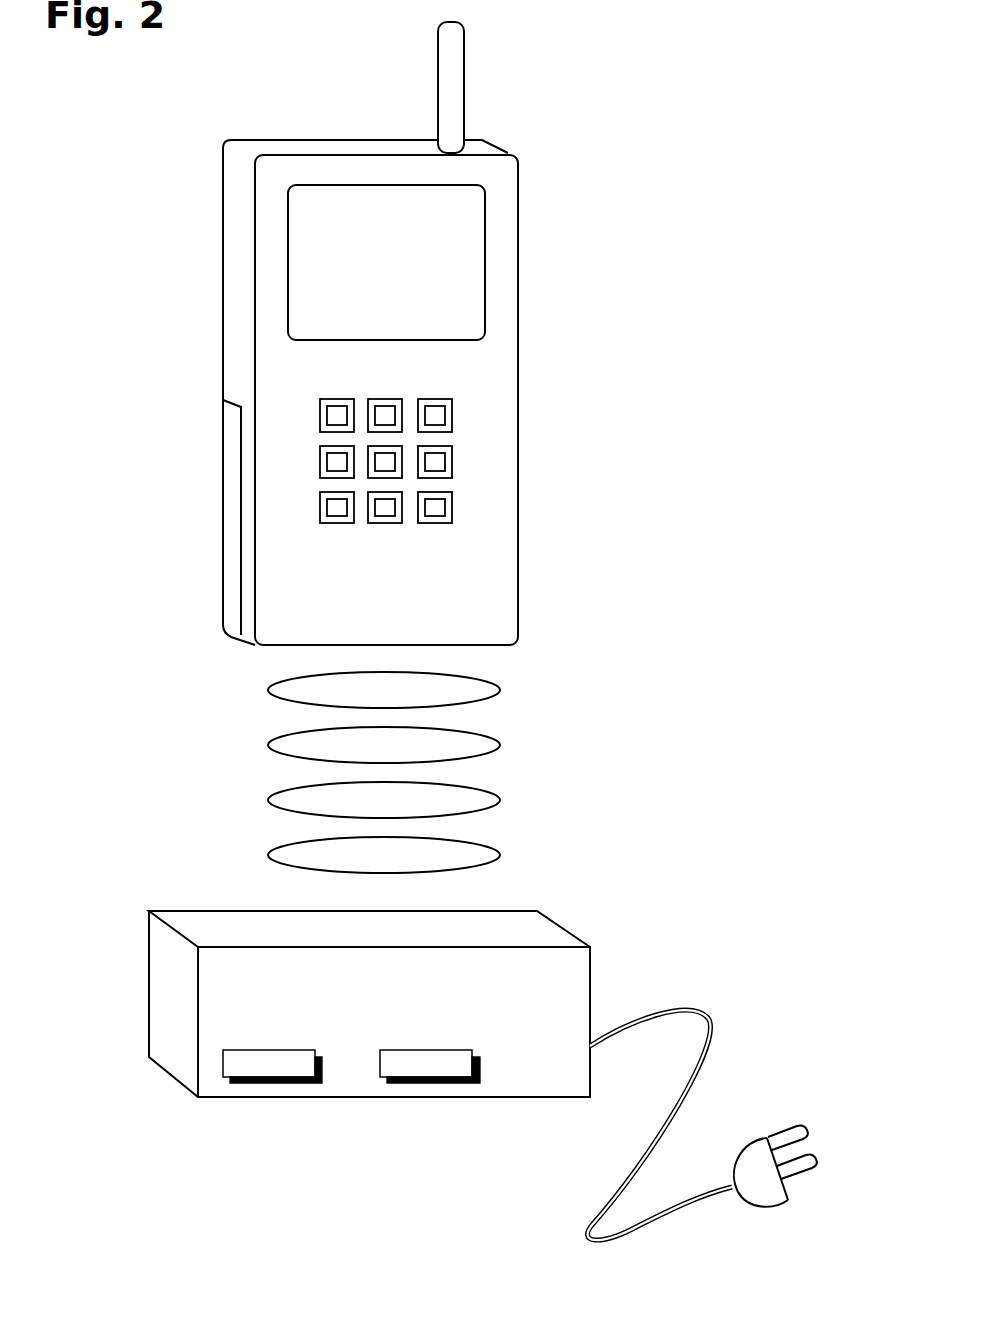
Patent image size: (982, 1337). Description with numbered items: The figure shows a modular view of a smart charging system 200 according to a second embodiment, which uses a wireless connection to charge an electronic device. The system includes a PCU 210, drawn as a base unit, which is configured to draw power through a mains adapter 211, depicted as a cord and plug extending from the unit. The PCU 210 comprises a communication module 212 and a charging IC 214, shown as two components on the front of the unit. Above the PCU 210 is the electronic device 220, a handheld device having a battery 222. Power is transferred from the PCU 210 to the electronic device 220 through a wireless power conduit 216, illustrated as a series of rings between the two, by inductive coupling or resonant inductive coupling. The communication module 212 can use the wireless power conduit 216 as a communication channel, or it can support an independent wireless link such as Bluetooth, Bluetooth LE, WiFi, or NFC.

The smart charging system 200 is at (634, 226).
The electronic device 220 is at (223, 184).
The battery 222 is at (222, 515).
The wireless power conduit 216 is at (590, 782).
The PCU 210 is at (149, 974).
The communication module 212 is at (268, 1072).
The charging IC 214 is at (435, 1072).
The mains adapter 211 is at (763, 1197).